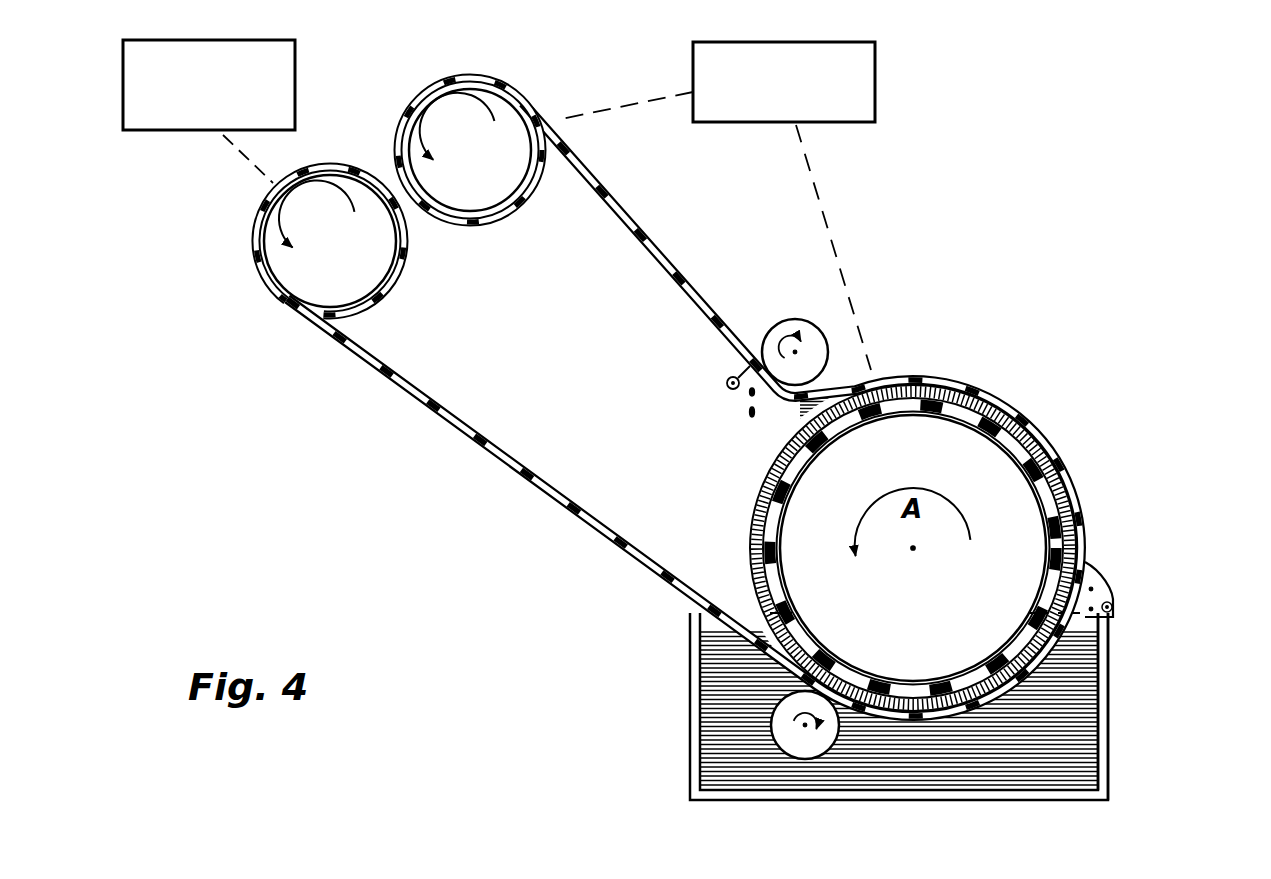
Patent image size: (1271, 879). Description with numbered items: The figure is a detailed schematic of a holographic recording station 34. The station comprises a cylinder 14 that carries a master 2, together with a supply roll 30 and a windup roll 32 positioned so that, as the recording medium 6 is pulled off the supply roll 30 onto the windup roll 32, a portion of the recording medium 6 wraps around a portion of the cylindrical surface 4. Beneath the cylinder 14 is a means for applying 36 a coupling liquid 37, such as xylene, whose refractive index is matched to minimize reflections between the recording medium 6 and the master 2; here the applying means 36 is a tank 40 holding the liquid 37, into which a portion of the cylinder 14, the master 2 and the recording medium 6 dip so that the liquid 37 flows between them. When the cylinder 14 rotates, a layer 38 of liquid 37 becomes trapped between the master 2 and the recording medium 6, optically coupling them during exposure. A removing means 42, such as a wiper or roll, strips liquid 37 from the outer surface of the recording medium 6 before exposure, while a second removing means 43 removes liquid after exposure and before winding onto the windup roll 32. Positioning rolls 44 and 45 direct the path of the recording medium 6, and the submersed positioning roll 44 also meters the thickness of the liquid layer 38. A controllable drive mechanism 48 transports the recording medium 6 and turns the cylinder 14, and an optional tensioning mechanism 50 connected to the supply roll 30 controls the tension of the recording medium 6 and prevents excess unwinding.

The master 2 is at (962, 411).
The cylindrical surface 4 is at (985, 407).
The recording medium 6 is at (502, 463).
The cylinder 14 is at (1040, 503).
The supply roll 30 is at (320, 258).
The windup roll 32 is at (457, 168).
The holographic recording station 34 is at (948, 172).
The means for applying 36 is at (1140, 753).
The coupling liquid 37 is at (1035, 753).
The layer of liquid 38 is at (752, 495).
The tank 40 is at (1110, 693).
The means for removing 42 is at (1120, 567).
The means for removing 43 is at (724, 369).
The positioning roll 44 is at (797, 752).
The positioning roll 45 is at (778, 320).
The drive mechanism 48 is at (763, 123).
The tensioning mechanism 50 is at (166, 133).